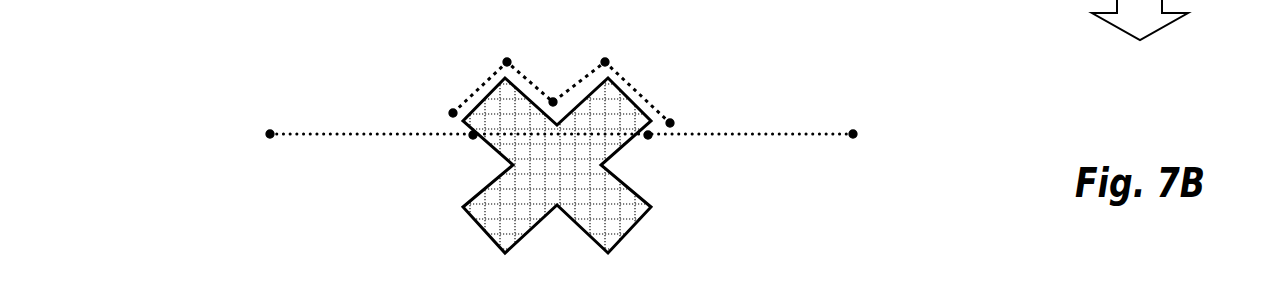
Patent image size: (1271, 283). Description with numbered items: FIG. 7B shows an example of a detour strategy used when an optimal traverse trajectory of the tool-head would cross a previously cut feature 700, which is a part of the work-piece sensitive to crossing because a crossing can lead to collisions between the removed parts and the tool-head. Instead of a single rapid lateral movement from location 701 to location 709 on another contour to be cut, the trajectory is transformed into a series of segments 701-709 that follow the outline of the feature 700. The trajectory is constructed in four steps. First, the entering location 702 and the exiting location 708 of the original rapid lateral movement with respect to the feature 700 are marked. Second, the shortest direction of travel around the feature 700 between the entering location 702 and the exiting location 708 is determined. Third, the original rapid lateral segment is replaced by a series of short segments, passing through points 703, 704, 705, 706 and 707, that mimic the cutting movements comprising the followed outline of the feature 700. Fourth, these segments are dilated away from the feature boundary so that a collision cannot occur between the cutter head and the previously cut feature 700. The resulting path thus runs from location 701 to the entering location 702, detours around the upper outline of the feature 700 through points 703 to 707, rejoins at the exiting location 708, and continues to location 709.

The previously cut feature 700 is at (557, 165).
The starting location of trajectory 701 is at (270, 137).
The entering location 702 is at (473, 138).
The detour segment vertex 703 is at (450, 113).
The detour segment vertex 704 is at (507, 60).
The detour segment vertex 705 is at (553, 100).
The detour segment vertex 706 is at (606, 60).
The detour segment vertex 707 is at (672, 122).
The exiting location 708 is at (650, 137).
The ending location of trajectory 709 is at (855, 133).